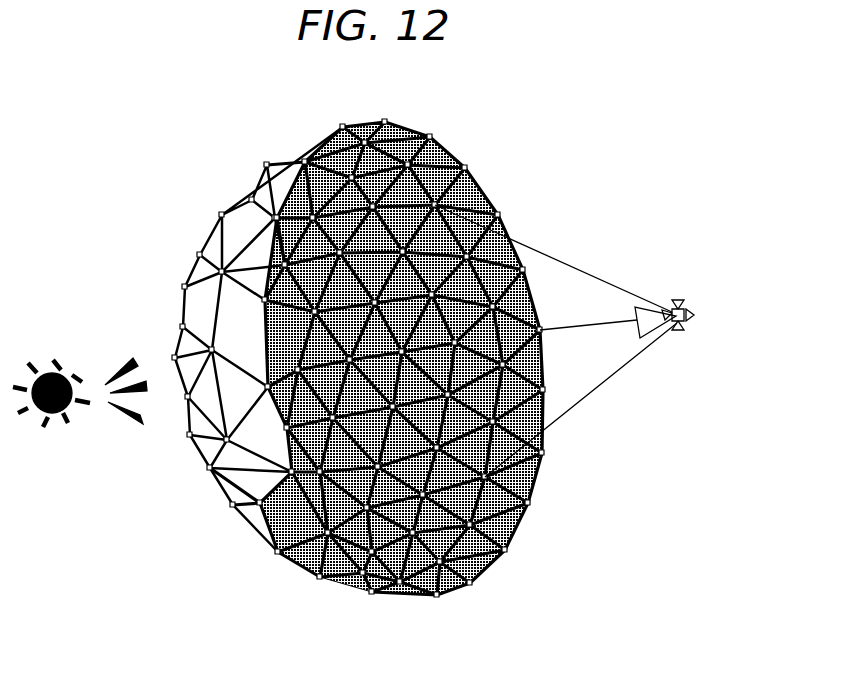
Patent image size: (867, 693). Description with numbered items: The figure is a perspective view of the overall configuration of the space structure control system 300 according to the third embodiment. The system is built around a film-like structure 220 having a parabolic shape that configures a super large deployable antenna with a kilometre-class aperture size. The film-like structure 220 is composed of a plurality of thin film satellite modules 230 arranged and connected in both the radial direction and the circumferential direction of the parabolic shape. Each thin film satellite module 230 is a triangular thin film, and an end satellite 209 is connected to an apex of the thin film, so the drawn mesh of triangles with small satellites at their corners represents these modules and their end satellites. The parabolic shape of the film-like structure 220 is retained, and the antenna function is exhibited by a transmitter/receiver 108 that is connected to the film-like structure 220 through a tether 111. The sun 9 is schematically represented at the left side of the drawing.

The sun 9 is at (50, 355).
The transmitter/receiver 108 is at (680, 326).
The tether 111 is at (560, 262).
The end satellite 209 is at (470, 167).
The film-like structure 220 is at (310, 145).
The thin film satellite module 230 is at (226, 240).
The space structure control system 300 is at (521, 103).